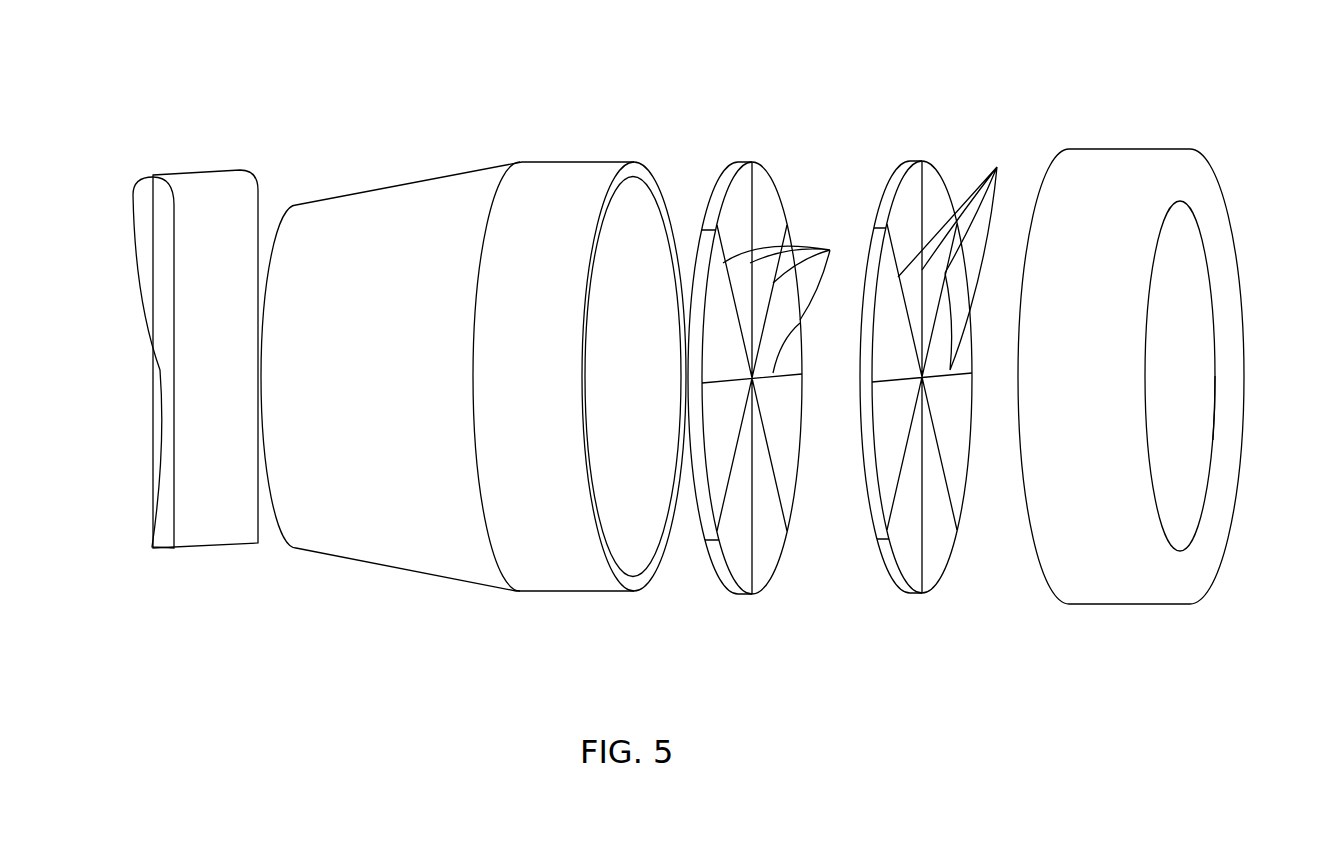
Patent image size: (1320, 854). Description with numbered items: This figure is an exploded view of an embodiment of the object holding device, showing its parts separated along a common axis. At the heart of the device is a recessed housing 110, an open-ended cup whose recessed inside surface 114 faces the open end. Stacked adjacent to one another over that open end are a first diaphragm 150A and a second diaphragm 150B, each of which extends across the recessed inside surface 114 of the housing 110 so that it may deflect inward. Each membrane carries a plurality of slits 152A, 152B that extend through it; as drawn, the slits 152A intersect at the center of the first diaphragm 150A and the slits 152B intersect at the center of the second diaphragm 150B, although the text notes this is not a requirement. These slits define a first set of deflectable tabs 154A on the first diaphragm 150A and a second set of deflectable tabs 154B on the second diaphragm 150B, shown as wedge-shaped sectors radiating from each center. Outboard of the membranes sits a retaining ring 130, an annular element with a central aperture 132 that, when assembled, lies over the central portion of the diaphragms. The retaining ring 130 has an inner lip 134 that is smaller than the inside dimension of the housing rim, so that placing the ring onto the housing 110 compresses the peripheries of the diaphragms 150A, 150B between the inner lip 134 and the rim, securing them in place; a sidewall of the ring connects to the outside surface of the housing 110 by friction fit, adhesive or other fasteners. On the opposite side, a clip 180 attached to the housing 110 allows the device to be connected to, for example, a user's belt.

The housing 110 is at (473, 317).
The recessed inside surface 114 is at (633, 377).
The retaining ring 130 is at (1160, 422).
The central aperture 132 is at (1180, 376).
The inner lip 134 is at (1202, 500).
The first diaphragm 150A is at (989, 318).
The second diaphragm 150B is at (806, 428).
The slits of the first diaphragm 152A is at (966, 251).
The slits of the second diaphragm 152B is at (790, 292).
The first set of deflectable tabs 154A is at (923, 377).
The second set of deflectable tabs 154B is at (750, 378).
The clip 180 is at (278, 433).